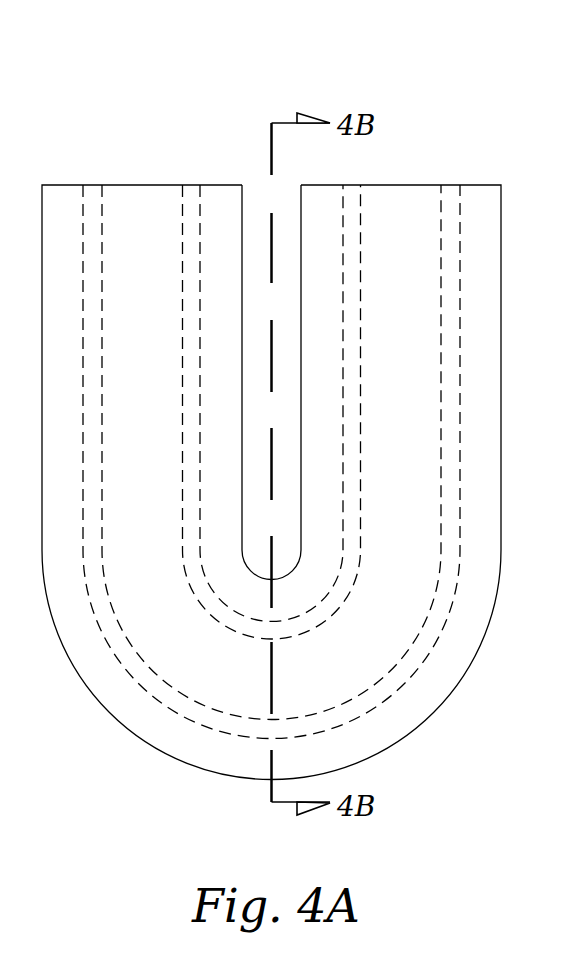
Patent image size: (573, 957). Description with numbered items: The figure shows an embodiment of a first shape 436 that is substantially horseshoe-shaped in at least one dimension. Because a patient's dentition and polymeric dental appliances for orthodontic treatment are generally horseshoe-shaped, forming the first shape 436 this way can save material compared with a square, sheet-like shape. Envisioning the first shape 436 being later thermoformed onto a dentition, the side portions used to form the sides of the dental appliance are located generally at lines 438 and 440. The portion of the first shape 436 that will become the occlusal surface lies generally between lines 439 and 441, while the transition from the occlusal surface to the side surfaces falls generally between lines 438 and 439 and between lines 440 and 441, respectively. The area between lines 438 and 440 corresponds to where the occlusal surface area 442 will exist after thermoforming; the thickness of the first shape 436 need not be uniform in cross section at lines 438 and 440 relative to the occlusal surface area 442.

The first shape 436 is at (98, 72).
The line 438 is at (343, 185).
The line 439 is at (362, 324).
The line 440 is at (461, 184).
The line 441 is at (441, 368).
The occlusal surface area 442 is at (438, 455).